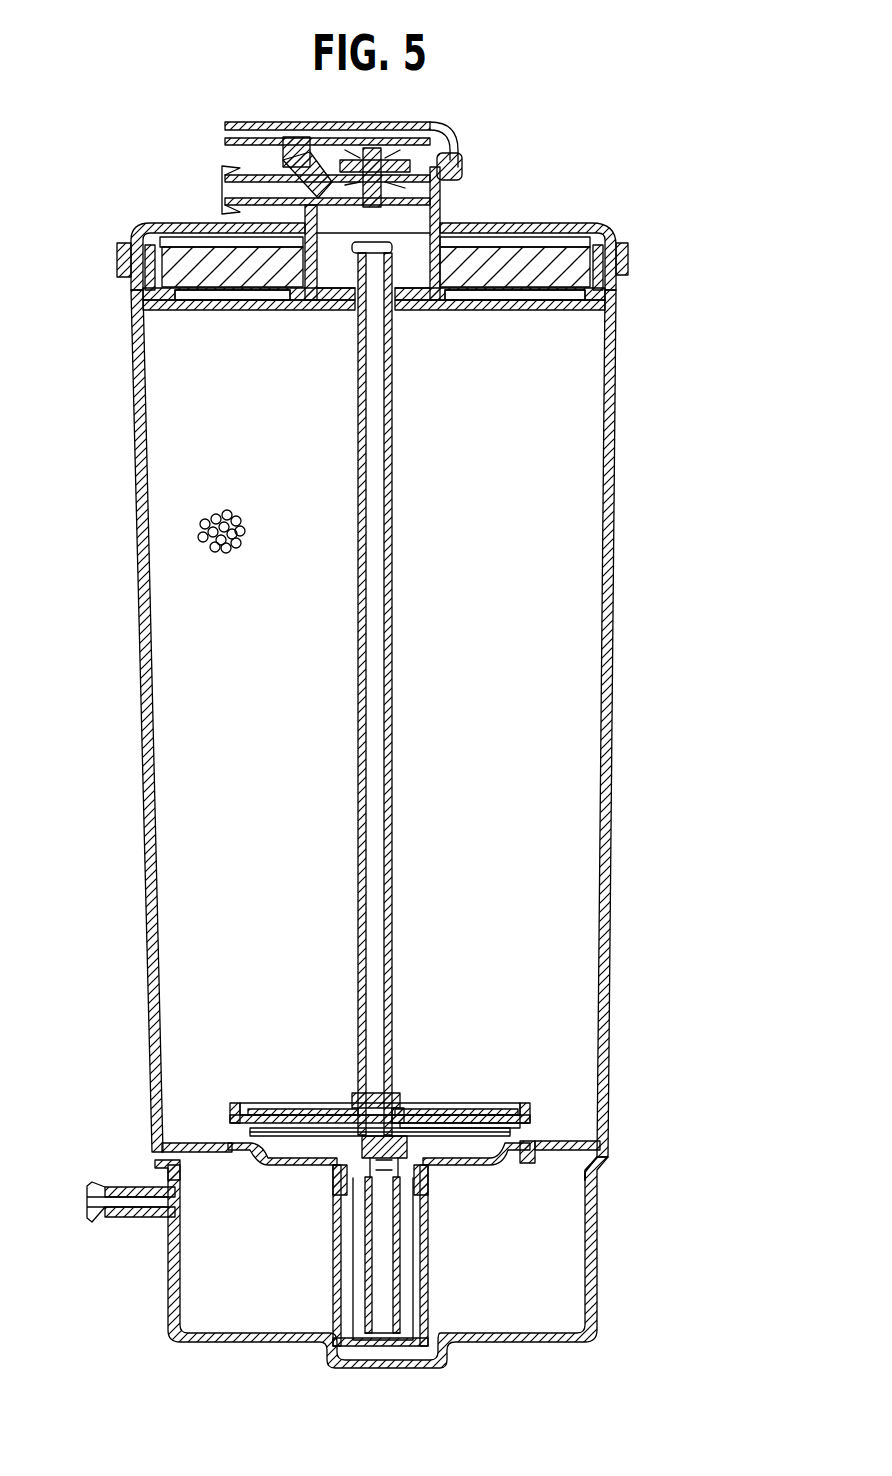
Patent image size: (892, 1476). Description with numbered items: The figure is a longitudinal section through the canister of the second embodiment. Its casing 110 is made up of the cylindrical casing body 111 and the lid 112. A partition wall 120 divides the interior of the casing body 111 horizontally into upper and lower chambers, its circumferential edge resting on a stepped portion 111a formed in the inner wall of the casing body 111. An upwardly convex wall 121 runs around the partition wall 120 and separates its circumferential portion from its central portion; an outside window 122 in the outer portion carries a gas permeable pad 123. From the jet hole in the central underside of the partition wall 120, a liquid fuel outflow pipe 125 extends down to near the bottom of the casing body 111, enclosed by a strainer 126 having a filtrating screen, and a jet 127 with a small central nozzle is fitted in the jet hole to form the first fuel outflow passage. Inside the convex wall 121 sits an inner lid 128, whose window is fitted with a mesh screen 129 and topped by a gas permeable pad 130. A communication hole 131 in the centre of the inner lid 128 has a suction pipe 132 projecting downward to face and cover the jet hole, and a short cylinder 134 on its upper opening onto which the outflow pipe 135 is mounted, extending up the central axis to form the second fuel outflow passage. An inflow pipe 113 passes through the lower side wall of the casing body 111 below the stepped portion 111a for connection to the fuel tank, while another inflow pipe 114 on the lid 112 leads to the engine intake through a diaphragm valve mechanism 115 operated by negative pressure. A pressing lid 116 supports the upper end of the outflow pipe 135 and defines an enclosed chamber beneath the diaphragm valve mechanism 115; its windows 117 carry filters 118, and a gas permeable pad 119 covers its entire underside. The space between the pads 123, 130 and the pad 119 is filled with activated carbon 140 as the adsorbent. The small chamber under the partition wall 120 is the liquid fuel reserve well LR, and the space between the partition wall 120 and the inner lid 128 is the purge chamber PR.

The casing 110 is at (640, 259).
The cylindrical casing body 111 is at (607, 668).
The stepped portion 111a is at (160, 1172).
The lid 112 is at (495, 222).
The inflow pipe 113 is at (125, 1215).
The inflow pipe 114 is at (240, 170).
The diaphragm valve mechanism 115 is at (442, 126).
The pressing lid 116 is at (593, 289).
The windows 117 is at (197, 304).
The filters 118 is at (183, 253).
The gas permeable pad 119 is at (287, 305).
The partition wall 120 is at (483, 1167).
The convex wall 121 is at (535, 1106).
The outside window 122 is at (550, 1157).
The gas permeable pad 123 is at (197, 1142).
The liquid fuel outflow pipe 125 is at (400, 1298).
The strainer 126 is at (430, 1320).
The jet 127 is at (388, 1177).
The inner lid 128 is at (420, 1127).
The mesh screen 129 is at (330, 1130).
The gas permeable pad 130 is at (263, 1112).
The communication hole 131 is at (377, 1100).
The suction pipe 132 is at (442, 1163).
The short cylinder 134 is at (403, 1100).
The outflow pipe 135 is at (392, 806).
The activated carbon 140 is at (198, 540).
The purge chamber PR is at (298, 1147).
The liquid fuel reserve well LR is at (290, 1298).